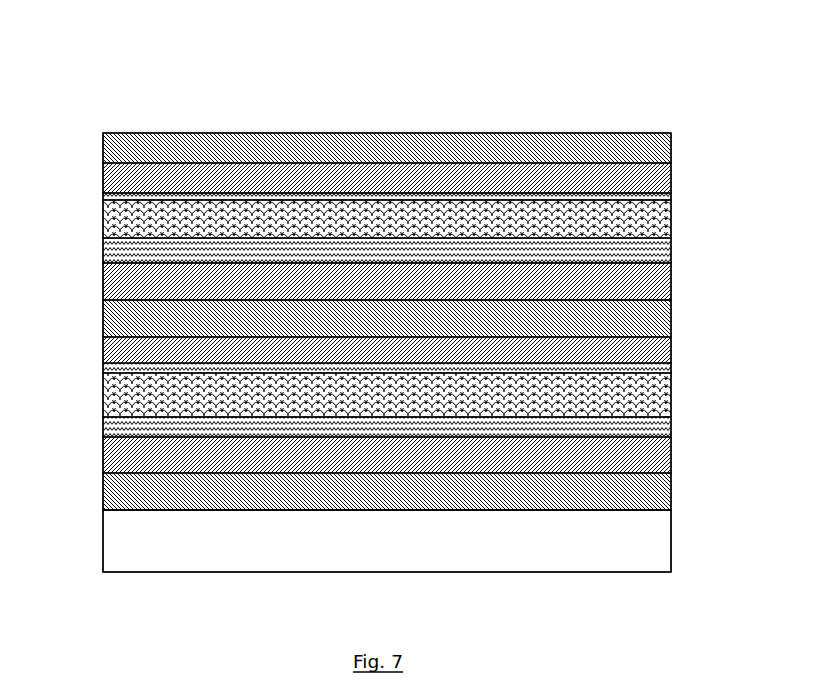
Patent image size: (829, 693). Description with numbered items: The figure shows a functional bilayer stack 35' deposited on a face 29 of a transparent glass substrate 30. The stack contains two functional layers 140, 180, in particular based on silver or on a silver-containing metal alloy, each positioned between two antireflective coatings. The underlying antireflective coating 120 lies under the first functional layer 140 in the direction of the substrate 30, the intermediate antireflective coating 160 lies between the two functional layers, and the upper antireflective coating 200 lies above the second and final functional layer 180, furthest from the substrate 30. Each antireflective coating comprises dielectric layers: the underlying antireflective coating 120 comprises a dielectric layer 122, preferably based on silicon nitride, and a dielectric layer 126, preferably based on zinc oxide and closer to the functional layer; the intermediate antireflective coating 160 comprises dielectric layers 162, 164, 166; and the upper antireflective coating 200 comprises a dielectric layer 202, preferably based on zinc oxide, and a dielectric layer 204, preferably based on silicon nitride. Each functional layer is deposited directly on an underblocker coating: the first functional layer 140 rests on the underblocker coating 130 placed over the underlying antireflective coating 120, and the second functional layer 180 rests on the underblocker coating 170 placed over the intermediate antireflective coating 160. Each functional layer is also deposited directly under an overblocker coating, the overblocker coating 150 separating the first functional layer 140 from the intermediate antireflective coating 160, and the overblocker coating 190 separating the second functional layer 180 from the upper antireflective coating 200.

The functional bilayer stack 35' is at (379, 294).
The dielectric layer 204 is at (118, 152).
The dielectric layer 202 is at (120, 170).
The upper antireflective coating 200 is at (380, 161).
The overblocker coating 190 is at (120, 202).
The functional layer 180 is at (662, 218).
The underblocker coating 170 is at (118, 245).
The dielectric layer 166 is at (118, 282).
The middle sublayer of middle stack 164 is at (118, 315).
The dielectric layer 162 is at (118, 345).
The intermediate antireflective coating 160 is at (376, 314).
The overblocker coating 150 is at (120, 376).
The functional layer 140 is at (660, 388).
The underblocker coating 130 is at (118, 428).
The dielectric layer 126 is at (118, 460).
The dielectric layer 122 is at (120, 493).
The underlying antireflective coating 120 is at (375, 475).
The transparent glass substrate 30 is at (397, 537).
The face 29 is at (610, 510).